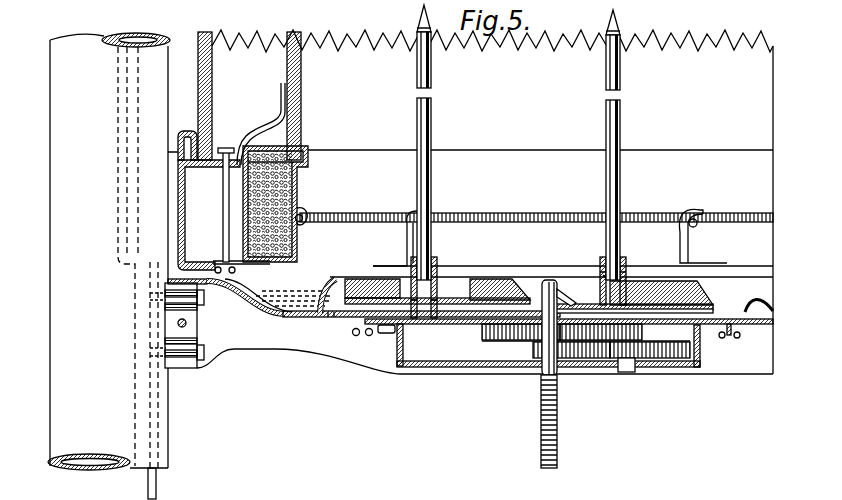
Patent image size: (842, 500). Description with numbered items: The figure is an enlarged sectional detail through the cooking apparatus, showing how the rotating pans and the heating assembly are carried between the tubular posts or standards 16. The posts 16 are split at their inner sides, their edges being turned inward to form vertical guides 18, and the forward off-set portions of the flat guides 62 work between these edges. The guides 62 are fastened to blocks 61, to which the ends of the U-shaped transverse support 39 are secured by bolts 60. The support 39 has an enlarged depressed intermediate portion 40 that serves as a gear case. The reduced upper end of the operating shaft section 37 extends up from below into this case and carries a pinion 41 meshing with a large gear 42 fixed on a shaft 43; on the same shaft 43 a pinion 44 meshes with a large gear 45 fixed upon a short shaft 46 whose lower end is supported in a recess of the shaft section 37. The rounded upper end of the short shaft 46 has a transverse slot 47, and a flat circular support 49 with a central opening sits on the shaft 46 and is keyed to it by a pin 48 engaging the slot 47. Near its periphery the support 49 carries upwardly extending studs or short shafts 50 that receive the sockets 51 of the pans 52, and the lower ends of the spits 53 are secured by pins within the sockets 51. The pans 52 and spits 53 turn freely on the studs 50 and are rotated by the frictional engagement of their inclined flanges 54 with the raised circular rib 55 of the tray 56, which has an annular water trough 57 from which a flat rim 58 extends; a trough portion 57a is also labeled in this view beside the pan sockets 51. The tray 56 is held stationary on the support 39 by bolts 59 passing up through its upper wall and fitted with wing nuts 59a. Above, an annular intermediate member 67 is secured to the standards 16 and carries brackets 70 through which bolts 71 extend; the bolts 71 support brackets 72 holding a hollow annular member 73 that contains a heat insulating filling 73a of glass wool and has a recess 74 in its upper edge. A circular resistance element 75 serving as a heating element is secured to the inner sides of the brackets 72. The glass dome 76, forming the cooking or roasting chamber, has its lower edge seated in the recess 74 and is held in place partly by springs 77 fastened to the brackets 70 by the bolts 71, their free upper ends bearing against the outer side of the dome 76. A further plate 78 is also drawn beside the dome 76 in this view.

The tubular post 16 is at (50, 250).
The vertical guide 18 is at (135, 332).
The guide 62 is at (118, 186).
The annular intermediate member 67 is at (180, 135).
The bracket 70 is at (216, 168).
The bolt 71 is at (223, 245).
The bracket 72 is at (299, 228).
The hollow annular member 73 is at (290, 186).
The heat insulating filling 73a is at (306, 160).
The recess 74 is at (303, 147).
The circular resistance element 75 is at (355, 213).
The glass dome 76 is at (301, 72).
The spring 77 is at (281, 108).
The wall plate 78 is at (212, 72).
The spit 53 is at (431, 200).
The inclined flange 54 is at (336, 279).
The socket 51 is at (437, 272).
The pan 52 is at (480, 280).
The short shaft 46 is at (542, 290).
The transverse slot 47 is at (550, 281).
The trough portion 57a is at (603, 273).
The pin 48 is at (565, 296).
The flat circular support 49 is at (700, 309).
The pinion 44 is at (642, 337).
The large gear 45 is at (482, 333).
The pinion 41 is at (533, 350).
The large gear 42 is at (672, 360).
The shaft 43 is at (625, 372).
The shaft section 37 is at (557, 415).
The transverse support 39 is at (488, 374).
The depressed intermediate portion 40 is at (423, 366).
The stud 50 is at (421, 318).
The raised circular rib 55 is at (333, 317).
The tray 56 is at (388, 333).
The bolt 59 is at (368, 336).
The wing nut 59a is at (354, 336).
The annular water trough 57 is at (284, 317).
The flat rim 58 is at (242, 291).
The bolt 60 is at (187, 325).
The block 61 is at (186, 360).